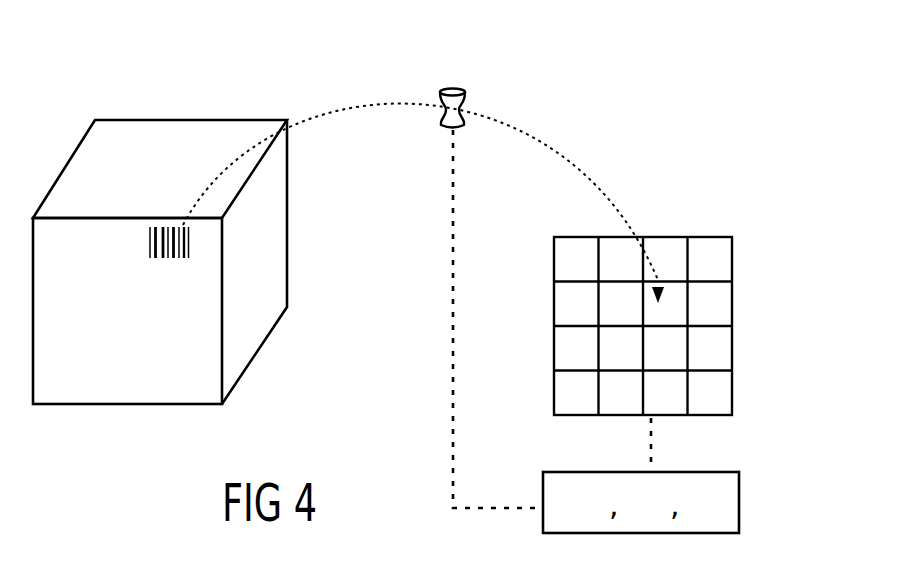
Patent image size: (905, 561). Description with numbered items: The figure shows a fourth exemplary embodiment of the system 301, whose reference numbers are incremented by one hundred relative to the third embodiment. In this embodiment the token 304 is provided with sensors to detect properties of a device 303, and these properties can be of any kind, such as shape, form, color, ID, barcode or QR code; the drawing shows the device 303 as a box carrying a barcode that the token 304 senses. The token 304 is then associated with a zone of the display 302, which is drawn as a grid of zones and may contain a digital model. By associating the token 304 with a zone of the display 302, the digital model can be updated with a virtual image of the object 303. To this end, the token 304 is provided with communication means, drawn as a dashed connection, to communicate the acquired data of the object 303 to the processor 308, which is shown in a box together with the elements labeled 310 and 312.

The system 301 is at (735, 127).
The display 302 is at (723, 213).
The device 303 is at (170, 163).
The token 304 is at (450, 93).
The processor 308 is at (607, 519).
The memory 310 is at (668, 519).
The decoder 312 is at (728, 519).